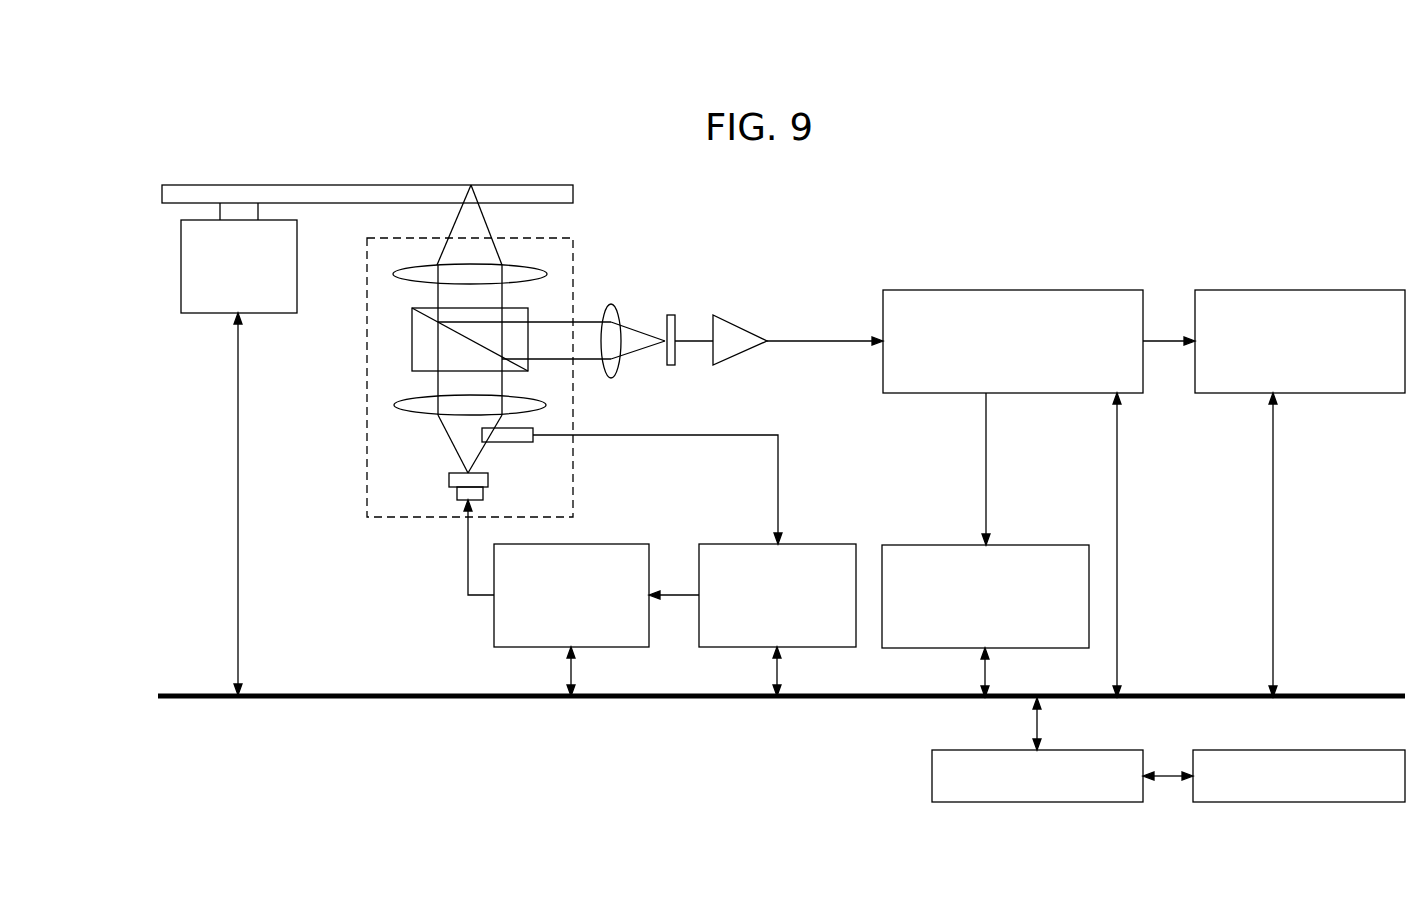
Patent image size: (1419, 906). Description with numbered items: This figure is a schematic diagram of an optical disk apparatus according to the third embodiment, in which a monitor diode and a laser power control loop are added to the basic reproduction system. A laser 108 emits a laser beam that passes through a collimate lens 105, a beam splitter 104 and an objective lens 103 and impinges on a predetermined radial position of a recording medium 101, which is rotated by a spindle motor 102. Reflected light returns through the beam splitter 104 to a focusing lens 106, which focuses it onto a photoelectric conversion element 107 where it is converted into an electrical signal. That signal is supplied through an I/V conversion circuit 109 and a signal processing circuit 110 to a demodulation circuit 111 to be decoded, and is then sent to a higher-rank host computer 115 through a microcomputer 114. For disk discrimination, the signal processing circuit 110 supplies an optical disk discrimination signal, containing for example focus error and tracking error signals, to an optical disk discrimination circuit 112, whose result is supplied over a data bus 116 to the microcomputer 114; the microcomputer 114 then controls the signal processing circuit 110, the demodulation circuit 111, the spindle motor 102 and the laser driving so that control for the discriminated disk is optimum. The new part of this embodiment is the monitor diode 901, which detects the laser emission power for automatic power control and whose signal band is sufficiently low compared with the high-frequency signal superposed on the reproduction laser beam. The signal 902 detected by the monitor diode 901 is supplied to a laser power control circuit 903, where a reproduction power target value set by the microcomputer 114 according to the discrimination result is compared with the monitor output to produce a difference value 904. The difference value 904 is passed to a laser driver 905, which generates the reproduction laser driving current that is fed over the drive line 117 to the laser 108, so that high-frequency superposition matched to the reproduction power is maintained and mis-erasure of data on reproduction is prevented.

The recording medium 101 is at (370, 183).
The spindle motor 102 is at (181, 268).
The objective lens 103 is at (393, 274).
The beam splitter 104 is at (412, 338).
The collimate lens 105 is at (394, 405).
The focusing lens 106 is at (611, 303).
The photoelectric conversion element 107 is at (671, 315).
The laser 108 is at (457, 495).
The I/V conversion circuit 109 is at (735, 321).
The signal processing circuit 110 is at (1071, 289).
The demodulation circuit 111 is at (1305, 289).
The optical disk discrimination circuit 112 is at (1030, 545).
The microcomputer 114 is at (1033, 802).
The higher-rank host computer 115 is at (1300, 802).
The data bus 116 is at (1192, 694).
The laser drive signal line 117 is at (468, 562).
The monitor diode 901 is at (506, 443).
The signal detected by the monitor diode 902 is at (660, 436).
The laser power control circuit 903 is at (807, 544).
The difference value 904 is at (674, 597).
The laser driver 905 is at (595, 544).